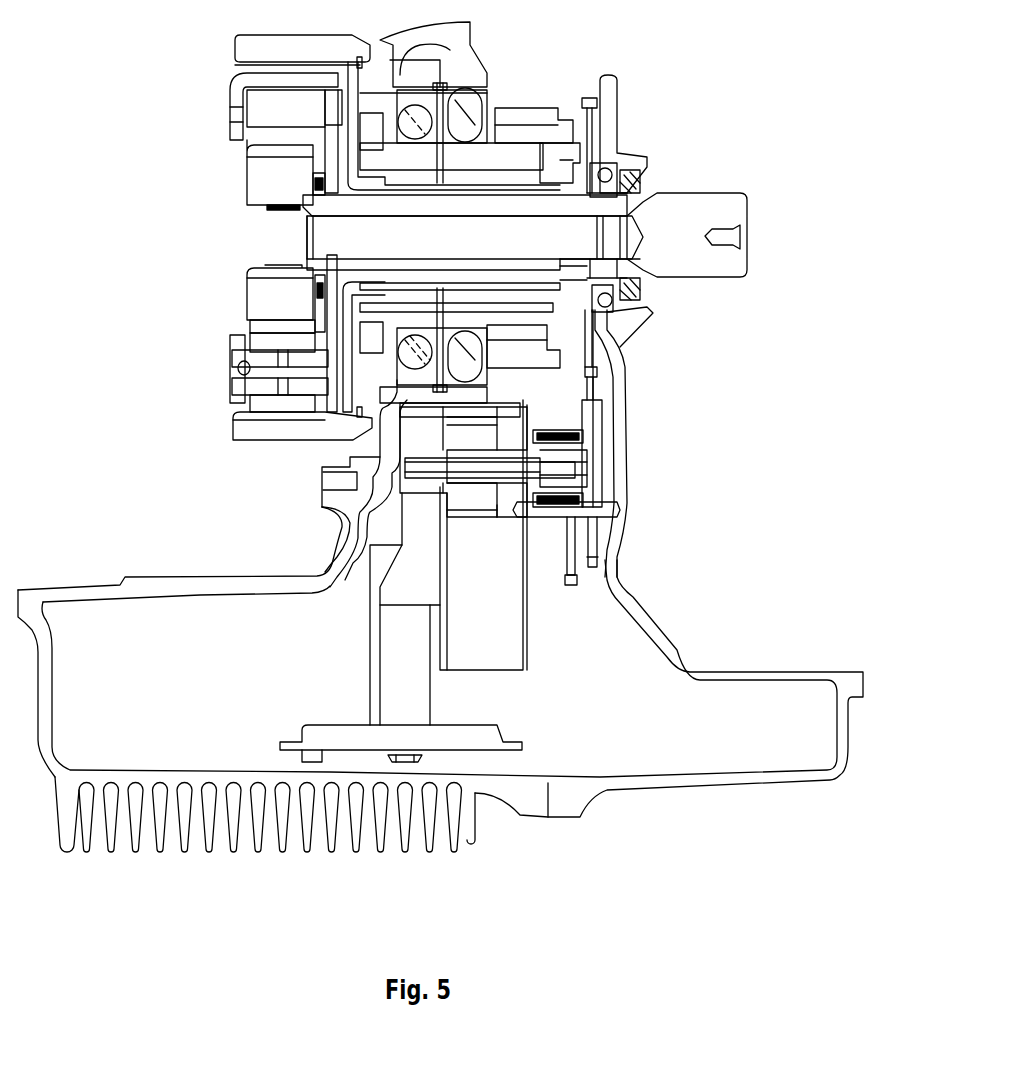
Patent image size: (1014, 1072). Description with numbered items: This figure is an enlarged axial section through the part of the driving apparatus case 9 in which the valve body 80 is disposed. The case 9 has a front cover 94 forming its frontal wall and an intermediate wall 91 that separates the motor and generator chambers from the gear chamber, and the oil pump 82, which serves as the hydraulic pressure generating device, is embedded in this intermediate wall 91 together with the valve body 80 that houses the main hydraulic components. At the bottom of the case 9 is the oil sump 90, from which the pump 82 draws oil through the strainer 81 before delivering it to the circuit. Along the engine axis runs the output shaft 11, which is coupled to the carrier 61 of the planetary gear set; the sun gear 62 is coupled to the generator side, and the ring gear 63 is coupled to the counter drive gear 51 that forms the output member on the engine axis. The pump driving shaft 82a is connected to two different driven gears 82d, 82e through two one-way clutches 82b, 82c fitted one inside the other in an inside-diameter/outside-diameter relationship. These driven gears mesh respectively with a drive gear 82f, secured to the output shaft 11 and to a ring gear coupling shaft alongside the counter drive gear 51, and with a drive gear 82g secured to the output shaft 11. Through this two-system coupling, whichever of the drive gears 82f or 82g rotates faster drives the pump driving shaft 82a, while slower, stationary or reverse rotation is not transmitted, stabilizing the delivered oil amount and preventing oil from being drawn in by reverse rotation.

The driving apparatus case 9 is at (100, 583).
The output shaft 11 is at (700, 268).
The counter drive gear 51 is at (540, 113).
The carrier 61 is at (235, 355).
The sun gear 62 is at (258, 193).
The ring gear 63 is at (242, 55).
The valve body 80 is at (523, 663).
The strainer 81 is at (298, 742).
The oil pump 82 is at (470, 517).
The pump driving shaft 82a is at (407, 478).
The one-way clutch 82b is at (573, 470).
The one-way clutch 82c is at (577, 423).
The driven gear 82d is at (597, 547).
The driven gear 82e is at (570, 586).
The drive gear 82f is at (560, 335).
The drive gear 82g is at (597, 352).
The oil sump 90 is at (645, 762).
The intermediate wall 91 is at (473, 75).
The front cover 94 is at (617, 122).